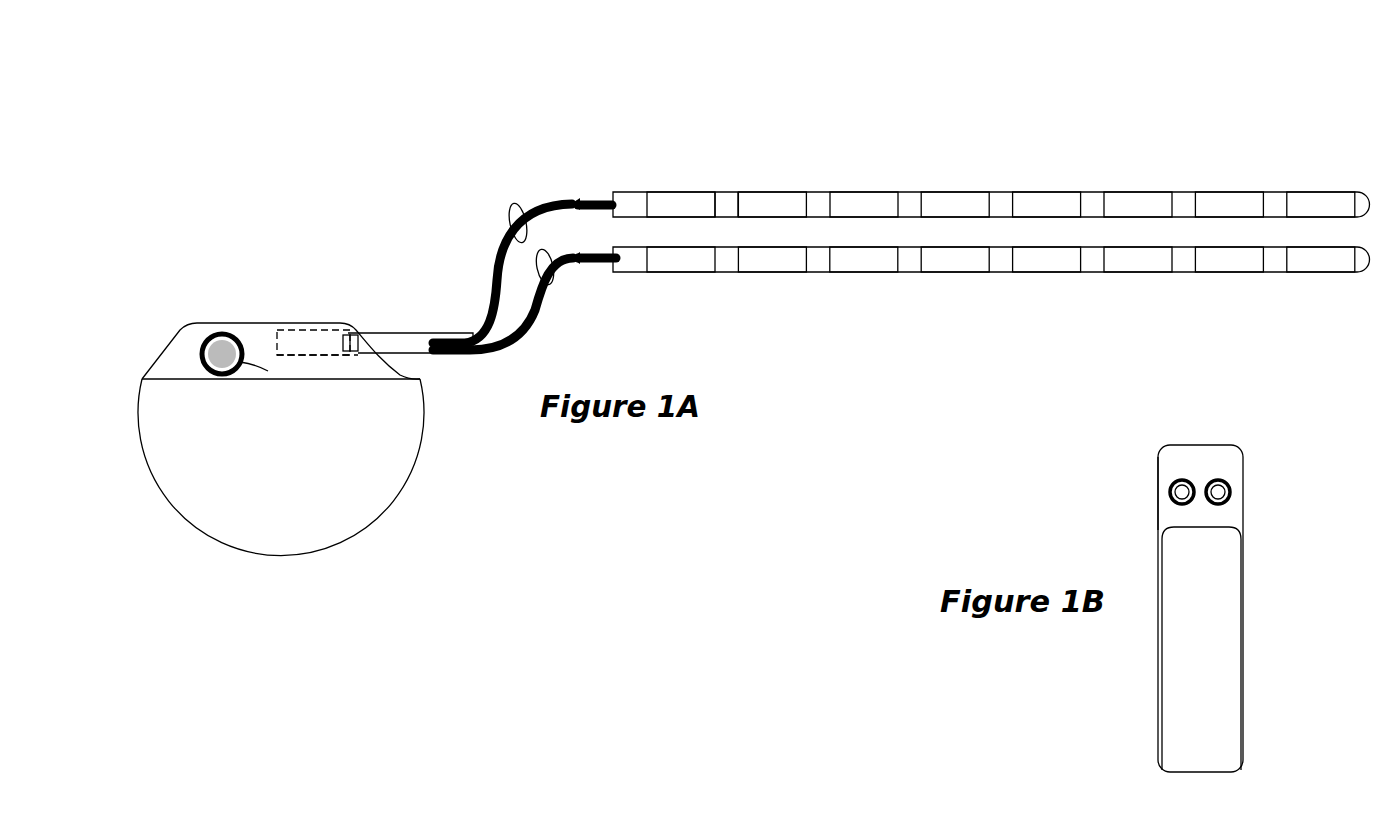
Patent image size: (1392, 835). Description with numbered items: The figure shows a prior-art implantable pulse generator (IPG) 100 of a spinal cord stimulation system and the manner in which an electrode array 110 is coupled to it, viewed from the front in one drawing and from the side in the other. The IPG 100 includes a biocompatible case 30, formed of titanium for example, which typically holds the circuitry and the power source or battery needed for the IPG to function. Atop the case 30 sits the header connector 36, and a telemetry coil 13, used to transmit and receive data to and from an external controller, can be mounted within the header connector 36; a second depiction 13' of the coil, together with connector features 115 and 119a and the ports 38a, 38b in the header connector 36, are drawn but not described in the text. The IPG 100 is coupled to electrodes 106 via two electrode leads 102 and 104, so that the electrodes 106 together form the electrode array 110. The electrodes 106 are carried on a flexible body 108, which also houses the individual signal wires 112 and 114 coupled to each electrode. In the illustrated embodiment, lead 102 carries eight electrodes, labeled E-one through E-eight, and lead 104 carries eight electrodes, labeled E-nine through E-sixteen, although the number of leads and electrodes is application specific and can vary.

In FIG. 1A, the implantable pulse generator 100 is at (236, 228).
In FIG. 1B, the implantable pulse generator 100 is at (1194, 420).
In FIG. 1A, the electrode lead 102 is at (970, 178).
In FIG. 1A, the electrode lead 104 is at (705, 300).
In FIG. 1A, the electrodes 106 is at (863, 192).
In FIG. 1A, the flexible body 108 is at (727, 192).
In FIG. 1A, the electrode array 110 is at (1114, 98).
In FIG. 1A, the signal wires 112 is at (510, 206).
In FIG. 1A, the signal wires 114 is at (558, 277).
In FIG. 1A, the connector assembly 115 is at (332, 294).
In FIG. 1A, the connector contact 119a is at (348, 333).
In FIG. 1A, the telemetry coil 13 is at (218, 384).
In FIG. 1A, the coil 13' is at (210, 333).
In FIG. 1A, the case 30 is at (424, 430).
In FIG. 1B, the case 30 is at (1243, 563).
In FIG. 1A, the header connector 36 is at (172, 337).
In FIG. 1B, the header connector 36 is at (1243, 505).
In FIG. 1A, the first connector port 38a is at (302, 330).
In FIG. 1B, the first connector port 38a is at (1177, 478).
In FIG. 1B, the second connector port 38b is at (1223, 478).